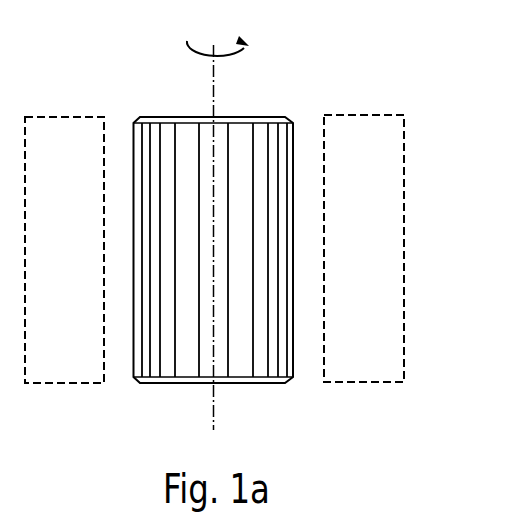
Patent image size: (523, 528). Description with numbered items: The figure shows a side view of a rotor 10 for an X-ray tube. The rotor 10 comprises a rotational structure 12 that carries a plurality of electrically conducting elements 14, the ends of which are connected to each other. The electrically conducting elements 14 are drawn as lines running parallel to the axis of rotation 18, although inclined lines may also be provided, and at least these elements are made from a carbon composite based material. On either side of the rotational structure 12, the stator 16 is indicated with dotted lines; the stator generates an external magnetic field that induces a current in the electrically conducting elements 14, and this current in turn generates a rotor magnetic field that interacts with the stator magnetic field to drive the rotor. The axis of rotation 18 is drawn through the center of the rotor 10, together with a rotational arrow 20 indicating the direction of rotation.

The rotor 10 is at (324, 78).
The rotational structure 12 is at (262, 108).
The electrically conducting elements 14 is at (267, 357).
The stator 16 is at (404, 218).
The axis of rotation 18 is at (214, 402).
The rotational arrow 20 is at (181, 53).